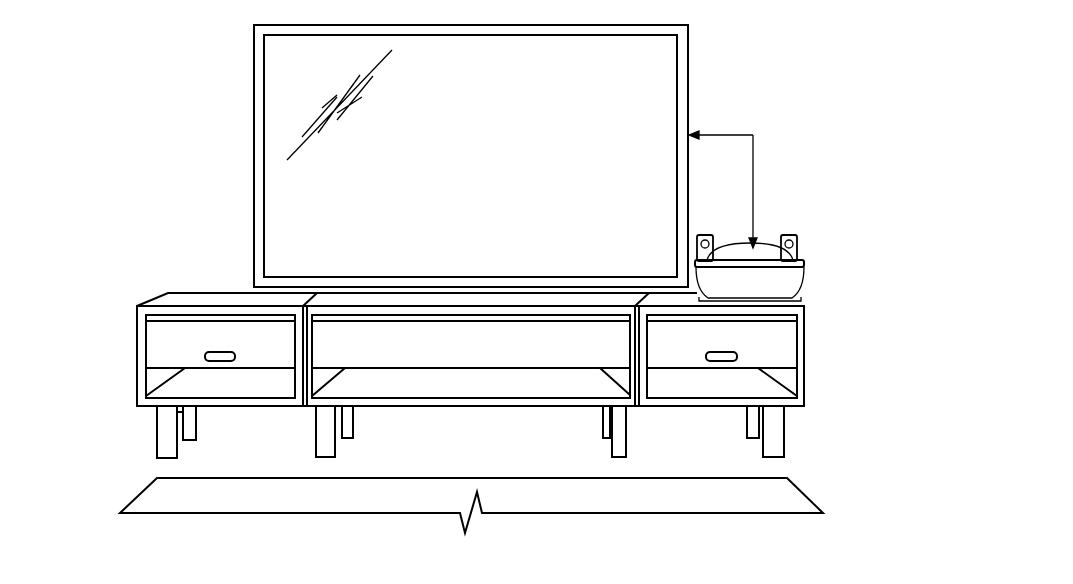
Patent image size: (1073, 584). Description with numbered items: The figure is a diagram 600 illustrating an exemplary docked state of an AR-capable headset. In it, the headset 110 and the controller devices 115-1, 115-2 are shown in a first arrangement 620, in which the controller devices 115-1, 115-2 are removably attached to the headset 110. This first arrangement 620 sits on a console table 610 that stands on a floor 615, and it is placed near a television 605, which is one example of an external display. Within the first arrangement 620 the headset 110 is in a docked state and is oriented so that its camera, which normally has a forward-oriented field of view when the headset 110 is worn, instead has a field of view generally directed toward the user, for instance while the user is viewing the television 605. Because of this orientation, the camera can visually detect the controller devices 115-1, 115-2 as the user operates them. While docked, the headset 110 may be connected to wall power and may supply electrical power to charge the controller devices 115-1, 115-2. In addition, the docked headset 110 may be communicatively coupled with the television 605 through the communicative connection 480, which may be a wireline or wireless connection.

The diagram 600 is at (897, 27).
The television 605 is at (689, 78).
The communicative connection 480 is at (720, 134).
The first arrangement 620 is at (861, 187).
The headset 110 is at (761, 242).
The controller device 115-1 is at (706, 232).
The controller device 115-2 is at (794, 232).
The console table 610 is at (136, 357).
The floor 615 is at (139, 497).